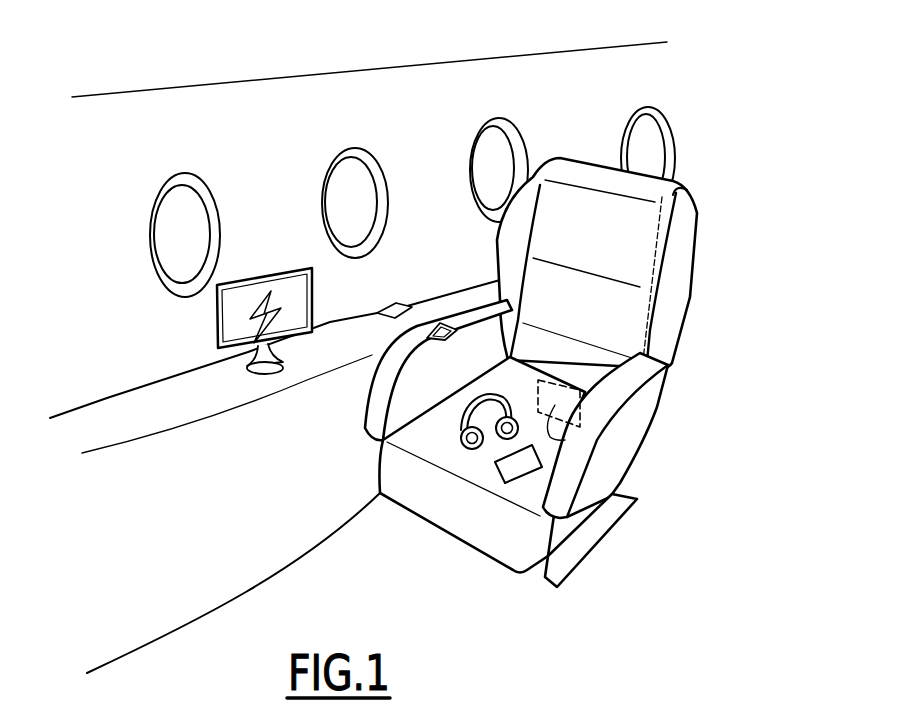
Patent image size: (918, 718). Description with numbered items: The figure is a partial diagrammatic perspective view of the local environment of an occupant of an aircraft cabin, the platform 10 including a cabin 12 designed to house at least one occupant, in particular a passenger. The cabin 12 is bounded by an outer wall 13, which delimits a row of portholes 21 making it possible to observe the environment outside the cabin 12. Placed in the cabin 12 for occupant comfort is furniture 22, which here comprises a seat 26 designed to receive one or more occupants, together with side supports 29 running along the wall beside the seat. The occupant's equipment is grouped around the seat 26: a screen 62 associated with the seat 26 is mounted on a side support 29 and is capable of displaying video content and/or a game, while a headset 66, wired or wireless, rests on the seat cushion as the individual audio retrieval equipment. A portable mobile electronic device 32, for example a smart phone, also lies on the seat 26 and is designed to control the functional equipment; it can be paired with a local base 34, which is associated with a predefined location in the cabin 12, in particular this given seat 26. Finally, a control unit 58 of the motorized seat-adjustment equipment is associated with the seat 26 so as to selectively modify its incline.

The platform 10 is at (270, 112).
The cabin 12 is at (756, 275).
The outer wall 13 is at (128, 70).
The portholes 21 is at (150, 222).
The furniture 22 is at (584, 321).
The seat 26 is at (586, 145).
The side supports 29 is at (137, 413).
The mobile electronic device 32 is at (520, 467).
The local base 34 is at (392, 308).
The control unit 58 is at (565, 440).
The screen 62 is at (238, 303).
The headset 66 is at (458, 440).